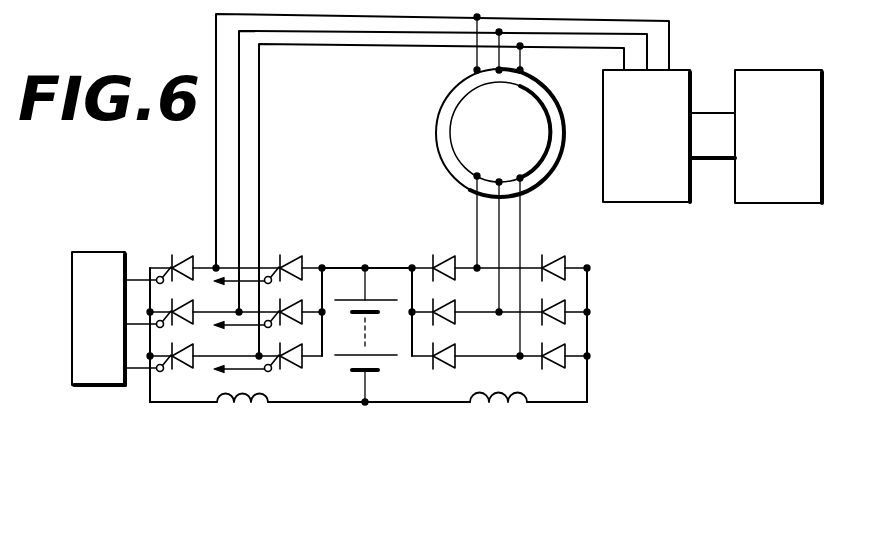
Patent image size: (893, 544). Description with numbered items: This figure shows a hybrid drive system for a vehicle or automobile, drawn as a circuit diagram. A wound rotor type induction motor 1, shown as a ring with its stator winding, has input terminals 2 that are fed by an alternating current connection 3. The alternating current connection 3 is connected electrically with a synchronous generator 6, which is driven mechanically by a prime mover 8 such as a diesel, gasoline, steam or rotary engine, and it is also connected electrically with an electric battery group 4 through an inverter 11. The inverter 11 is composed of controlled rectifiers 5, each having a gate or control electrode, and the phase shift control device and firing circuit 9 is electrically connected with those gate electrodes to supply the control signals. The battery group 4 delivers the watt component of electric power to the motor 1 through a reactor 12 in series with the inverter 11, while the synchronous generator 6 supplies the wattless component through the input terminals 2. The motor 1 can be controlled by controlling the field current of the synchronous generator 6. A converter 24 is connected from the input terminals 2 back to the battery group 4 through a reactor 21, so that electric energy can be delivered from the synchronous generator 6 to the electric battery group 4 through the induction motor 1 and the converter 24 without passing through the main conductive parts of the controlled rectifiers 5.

The wound rotor type induction motor 1 is at (500, 133).
The input terminals 2 is at (477, 70).
The alternating current connection 3 is at (392, 17).
The electric battery group 4 is at (367, 335).
The controlled rectifiers 5 is at (172, 358).
The synchronous generator 6 is at (650, 253).
The prime mover 8 is at (738, 222).
The phase shift control device and firing circuit 9 is at (75, 420).
The inverter 11 is at (275, 326).
The reactor 12 is at (240, 403).
The reactor 21 is at (503, 408).
The converter 24 is at (515, 293).